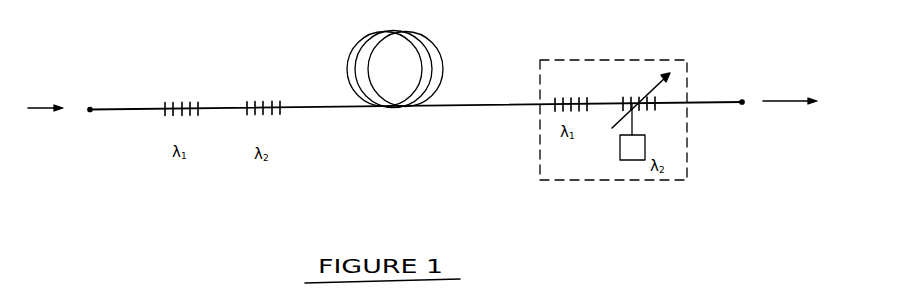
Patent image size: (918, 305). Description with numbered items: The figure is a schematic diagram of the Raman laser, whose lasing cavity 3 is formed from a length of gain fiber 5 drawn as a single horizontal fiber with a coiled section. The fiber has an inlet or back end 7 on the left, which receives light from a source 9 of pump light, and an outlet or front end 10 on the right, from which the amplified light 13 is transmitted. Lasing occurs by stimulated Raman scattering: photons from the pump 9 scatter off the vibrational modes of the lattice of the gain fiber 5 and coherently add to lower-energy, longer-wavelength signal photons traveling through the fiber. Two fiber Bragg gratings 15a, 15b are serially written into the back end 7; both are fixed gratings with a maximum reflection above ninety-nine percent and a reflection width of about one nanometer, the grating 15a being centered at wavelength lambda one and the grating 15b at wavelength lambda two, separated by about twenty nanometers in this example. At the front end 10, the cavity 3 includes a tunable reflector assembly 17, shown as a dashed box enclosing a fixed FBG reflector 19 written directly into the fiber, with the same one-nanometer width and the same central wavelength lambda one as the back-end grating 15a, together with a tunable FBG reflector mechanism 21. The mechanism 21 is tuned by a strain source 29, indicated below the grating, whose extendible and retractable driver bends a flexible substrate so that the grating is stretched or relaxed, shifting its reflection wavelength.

The lasing cavity 3 is at (401, 81).
The gain fiber 5 is at (387, 61).
The inlet or back end 7 is at (92, 111).
The source of pump light 9 is at (40, 110).
The outlet or front end 10 is at (740, 104).
The amplified light 13 is at (791, 103).
The fiber Bragg grating 15a is at (185, 101).
The fiber Bragg grating 15b is at (268, 101).
The tunable reflector assembly 17 is at (597, 55).
The fixed FBG reflector 19 is at (577, 100).
The tunable FBG reflector mechanism 21 is at (631, 100).
The strain source 29 is at (641, 157).